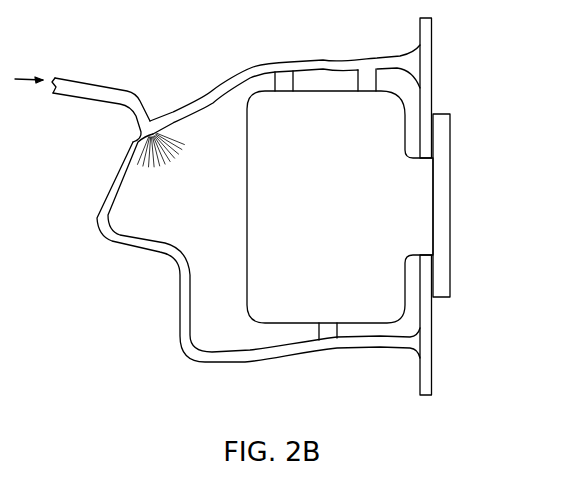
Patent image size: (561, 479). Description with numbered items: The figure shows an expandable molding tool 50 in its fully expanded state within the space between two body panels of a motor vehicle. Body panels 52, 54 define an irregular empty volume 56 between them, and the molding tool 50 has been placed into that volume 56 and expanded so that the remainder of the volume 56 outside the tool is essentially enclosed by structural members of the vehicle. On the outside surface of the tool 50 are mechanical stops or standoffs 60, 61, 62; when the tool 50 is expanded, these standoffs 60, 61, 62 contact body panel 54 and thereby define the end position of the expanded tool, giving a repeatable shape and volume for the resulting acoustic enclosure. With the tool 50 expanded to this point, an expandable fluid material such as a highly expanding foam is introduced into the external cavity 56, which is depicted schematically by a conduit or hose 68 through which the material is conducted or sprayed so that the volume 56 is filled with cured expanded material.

The expandable molding tool 50 is at (447, 195).
The body panel 52 is at (430, 328).
The body panel 54 is at (247, 72).
The irregular empty volume 56 is at (201, 311).
The standoff 60 is at (366, 77).
The standoff 61 is at (284, 78).
The standoff 62 is at (322, 338).
The conduit or hose 68 is at (78, 79).